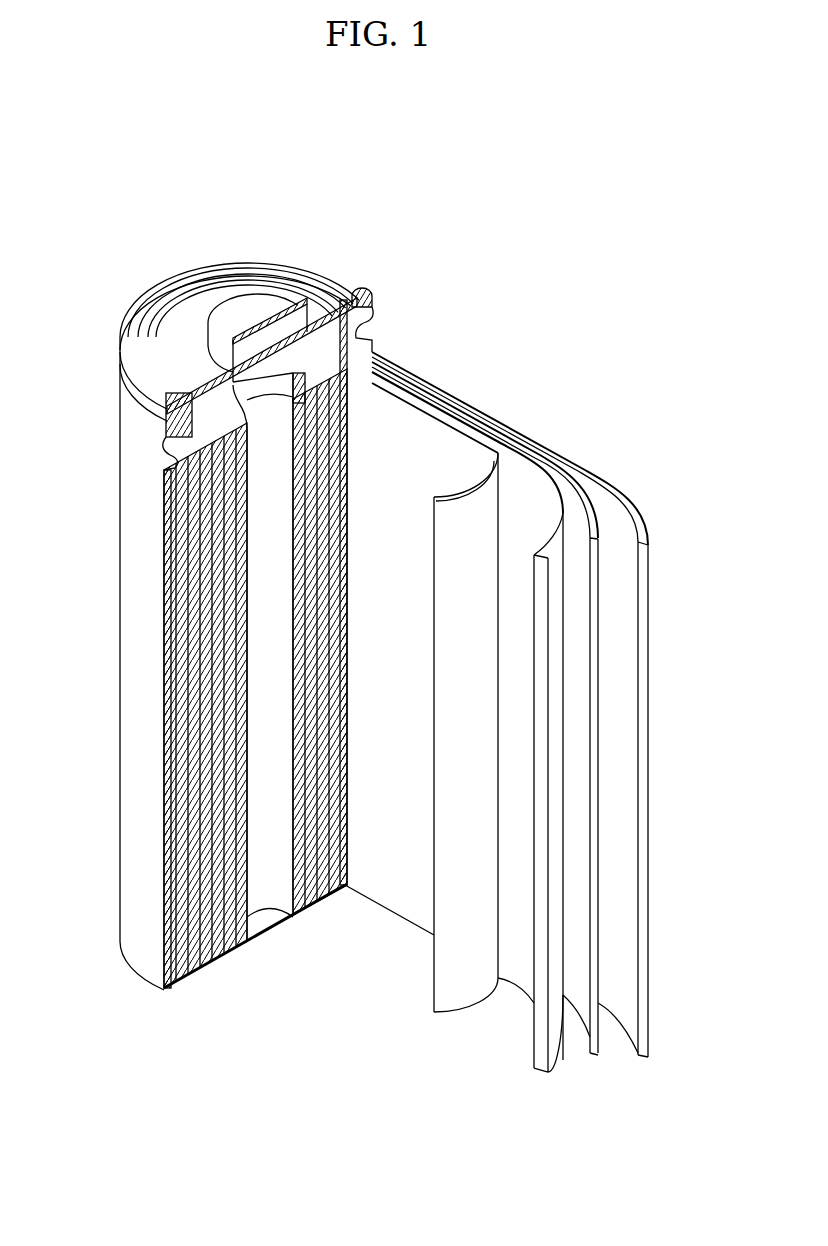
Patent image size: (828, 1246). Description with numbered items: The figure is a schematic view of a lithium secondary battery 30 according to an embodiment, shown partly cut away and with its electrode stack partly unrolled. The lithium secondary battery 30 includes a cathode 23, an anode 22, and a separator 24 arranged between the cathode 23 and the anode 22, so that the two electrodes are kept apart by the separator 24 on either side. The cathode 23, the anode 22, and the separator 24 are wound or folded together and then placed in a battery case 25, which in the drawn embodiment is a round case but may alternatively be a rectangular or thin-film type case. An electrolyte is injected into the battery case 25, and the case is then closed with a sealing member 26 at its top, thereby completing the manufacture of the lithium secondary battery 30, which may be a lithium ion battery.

The lithium secondary battery 30 is at (318, 205).
The battery case 25 is at (127, 671).
The sealing member 26 is at (242, 305).
The anode 22 is at (631, 521).
The cathode 23 is at (552, 505).
The separator 24 is at (480, 487).